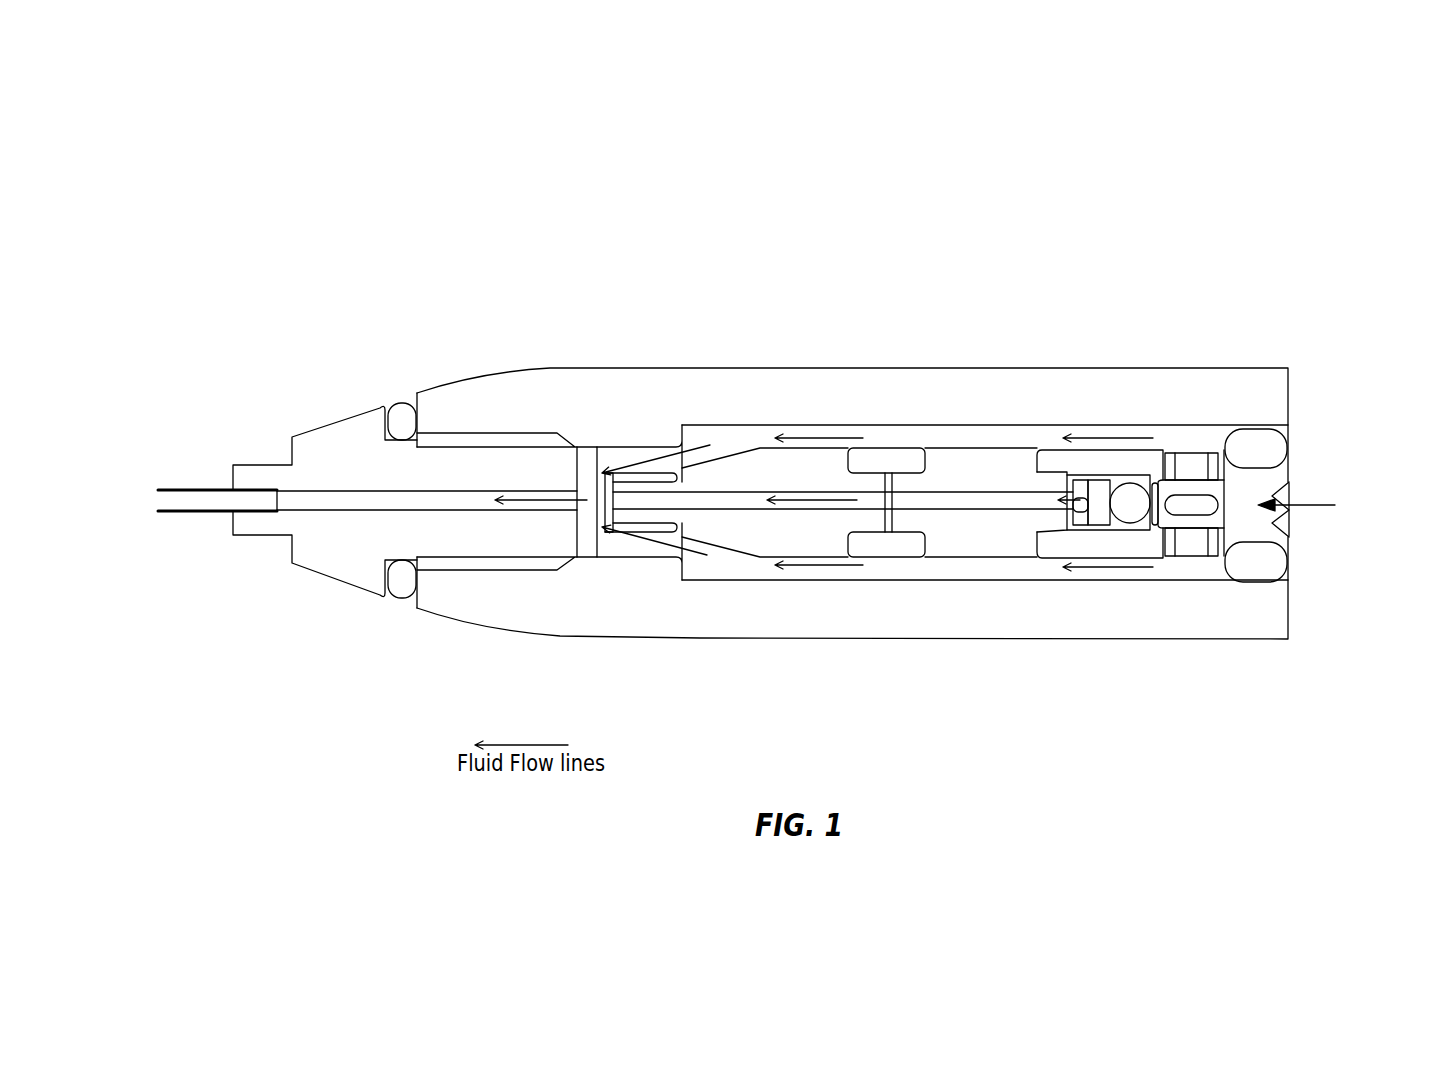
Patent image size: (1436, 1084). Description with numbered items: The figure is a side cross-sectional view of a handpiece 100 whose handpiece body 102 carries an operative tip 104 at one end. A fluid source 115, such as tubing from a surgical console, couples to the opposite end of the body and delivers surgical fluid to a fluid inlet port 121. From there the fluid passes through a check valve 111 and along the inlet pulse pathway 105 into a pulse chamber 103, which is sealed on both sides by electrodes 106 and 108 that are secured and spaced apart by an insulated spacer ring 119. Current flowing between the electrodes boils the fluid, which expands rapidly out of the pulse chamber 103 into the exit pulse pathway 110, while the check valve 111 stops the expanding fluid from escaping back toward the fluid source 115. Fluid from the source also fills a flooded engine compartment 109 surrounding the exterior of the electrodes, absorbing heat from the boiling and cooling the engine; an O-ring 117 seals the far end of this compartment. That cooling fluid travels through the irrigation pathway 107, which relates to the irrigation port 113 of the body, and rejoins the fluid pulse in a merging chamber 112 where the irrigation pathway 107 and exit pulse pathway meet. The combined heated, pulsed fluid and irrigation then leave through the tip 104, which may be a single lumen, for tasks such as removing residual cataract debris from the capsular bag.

The handpiece 100 is at (973, 222).
The handpiece body 102 is at (1230, 368).
The pulse chamber 103 is at (890, 490).
The operative tip 104 is at (183, 490).
The inlet pulse pathway 105 is at (993, 503).
The electrode 106 is at (762, 484).
The irrigation pathway 107 is at (637, 547).
The electrode 108 is at (979, 484).
The flooded engine compartment 109 is at (785, 568).
The exit pulse pathway 110 is at (692, 498).
The check valve 111 is at (1133, 515).
The merging chamber 112 is at (590, 452).
The irrigation port 113 is at (1190, 540).
The fluid source 115 is at (1379, 517).
The O-ring 117 is at (1255, 440).
The insulated spacer ring 119 is at (868, 450).
The fluid inlet port 121 is at (1289, 482).